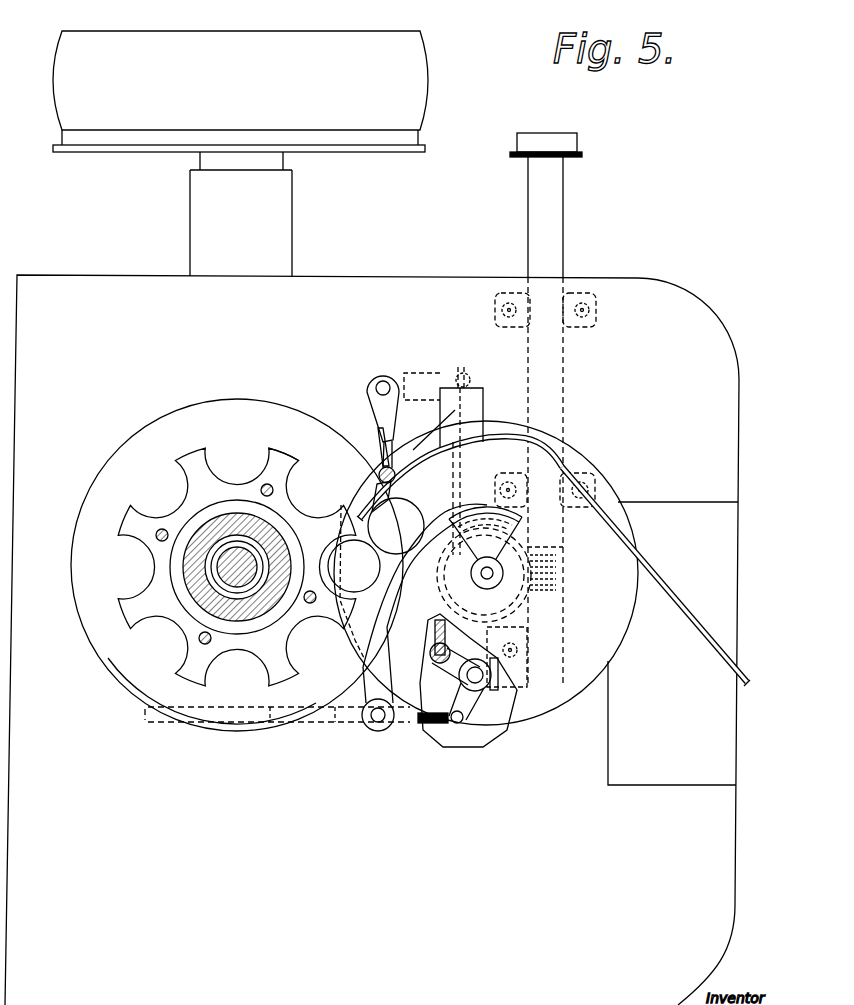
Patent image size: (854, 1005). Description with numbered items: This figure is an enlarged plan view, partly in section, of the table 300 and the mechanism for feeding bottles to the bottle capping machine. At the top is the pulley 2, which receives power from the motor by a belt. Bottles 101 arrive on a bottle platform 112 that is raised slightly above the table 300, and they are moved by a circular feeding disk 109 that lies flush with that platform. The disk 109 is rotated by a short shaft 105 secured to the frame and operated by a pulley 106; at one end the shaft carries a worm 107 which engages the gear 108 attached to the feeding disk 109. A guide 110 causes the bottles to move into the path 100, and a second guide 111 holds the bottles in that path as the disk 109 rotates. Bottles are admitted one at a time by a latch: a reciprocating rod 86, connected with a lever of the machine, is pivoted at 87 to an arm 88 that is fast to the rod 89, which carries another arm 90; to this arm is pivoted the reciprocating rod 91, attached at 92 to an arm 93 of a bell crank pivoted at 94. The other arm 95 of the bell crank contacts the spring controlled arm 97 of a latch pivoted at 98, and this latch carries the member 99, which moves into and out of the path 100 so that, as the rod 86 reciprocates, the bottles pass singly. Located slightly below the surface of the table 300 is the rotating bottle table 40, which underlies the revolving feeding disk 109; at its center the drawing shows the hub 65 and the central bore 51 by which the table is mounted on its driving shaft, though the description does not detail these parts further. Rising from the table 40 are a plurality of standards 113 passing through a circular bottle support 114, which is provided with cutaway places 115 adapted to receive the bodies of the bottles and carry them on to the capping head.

The pulley 2 is at (218, 45).
The bottle table 40 is at (152, 428).
The shaft bore 51 is at (234, 560).
The hub 65 is at (217, 516).
The reciprocating rod 86 is at (190, 722).
The pivot 87 is at (458, 723).
The arm 88 is at (470, 696).
The rod 89 is at (470, 683).
The arm 90 is at (437, 660).
The reciprocating rod 91 is at (462, 468).
The attachment point 92 is at (468, 378).
The bell crank arm 93 is at (418, 373).
The bell crank pivot 94 is at (376, 382).
The bell crank arm 95 is at (382, 408).
The spring controlled arm 97 is at (393, 437).
The latch pivot 98 is at (381, 452).
The latch member 99 is at (376, 498).
The bottle path 100 is at (418, 482).
The bottle 101 is at (416, 522).
The short shaft 105 is at (538, 203).
The pulley 106 is at (568, 143).
The worm 107 is at (560, 568).
The gear 108 is at (528, 596).
The circular feeding disk 109 is at (553, 700).
The guide 110 is at (676, 594).
The guide 111 is at (425, 585).
The bottle platform 112 is at (654, 772).
The standards 113 is at (272, 489).
The circular bottle support 114 is at (283, 452).
The cutaway places 115 is at (125, 572).
The table 300 is at (367, 833).